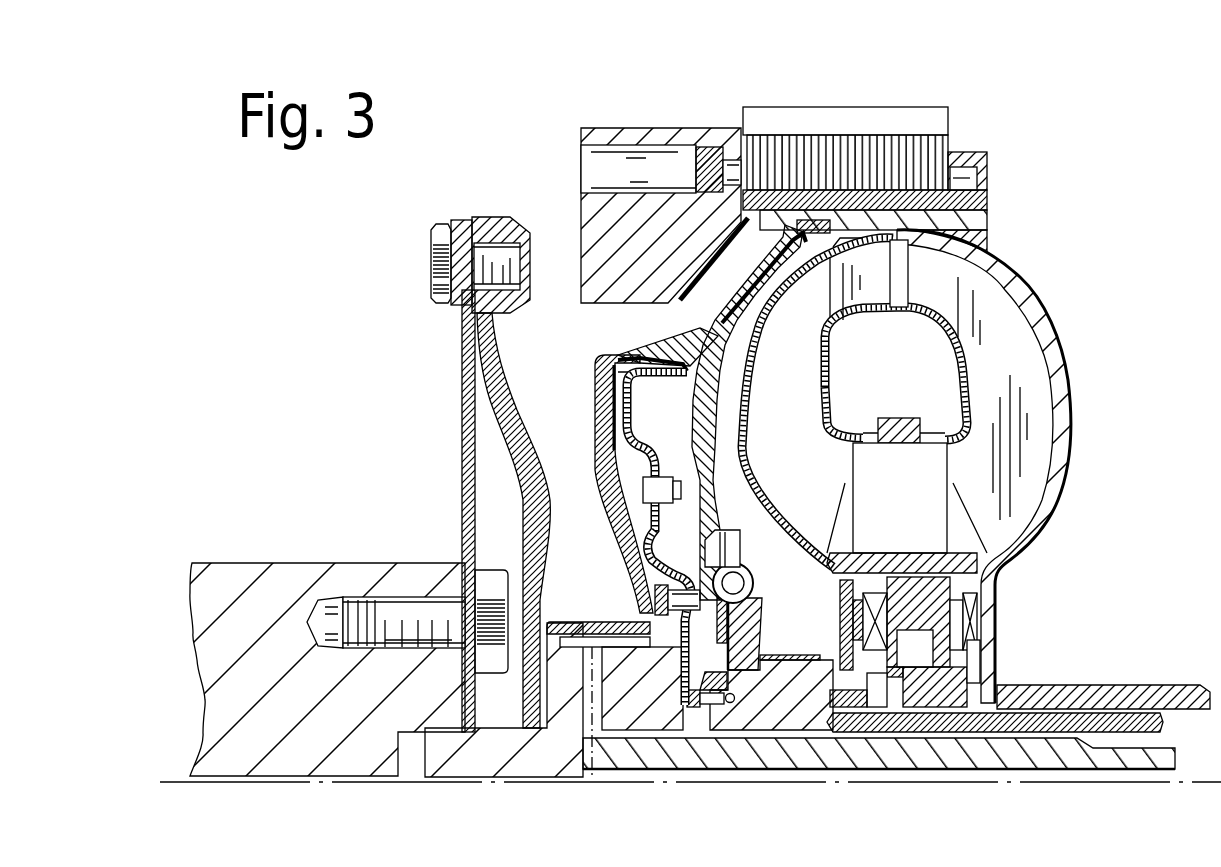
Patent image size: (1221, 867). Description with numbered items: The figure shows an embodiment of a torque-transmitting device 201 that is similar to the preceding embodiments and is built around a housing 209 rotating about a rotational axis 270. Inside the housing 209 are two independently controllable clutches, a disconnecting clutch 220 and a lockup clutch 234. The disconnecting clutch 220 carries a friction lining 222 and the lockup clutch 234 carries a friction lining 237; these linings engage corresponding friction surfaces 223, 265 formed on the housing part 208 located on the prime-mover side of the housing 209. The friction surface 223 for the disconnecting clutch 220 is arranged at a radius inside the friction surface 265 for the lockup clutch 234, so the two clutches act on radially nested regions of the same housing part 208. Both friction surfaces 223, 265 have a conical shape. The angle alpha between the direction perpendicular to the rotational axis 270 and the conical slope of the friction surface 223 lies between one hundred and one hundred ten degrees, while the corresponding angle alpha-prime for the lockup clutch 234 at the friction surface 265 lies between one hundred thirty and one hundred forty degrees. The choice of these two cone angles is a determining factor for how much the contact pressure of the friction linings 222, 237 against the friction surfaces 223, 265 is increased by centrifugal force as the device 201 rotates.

The torque-transmitting device 201 is at (1082, 84).
The housing part 208 is at (603, 393).
The housing 209 is at (1030, 268).
The disconnecting clutch 220 is at (628, 447).
The friction lining 222 is at (658, 357).
The friction surface 223 is at (644, 345).
The lockup clutch 234 is at (682, 407).
The friction lining 237 is at (774, 238).
The friction surface 265 is at (746, 272).
The rotational axis 270 is at (898, 785).